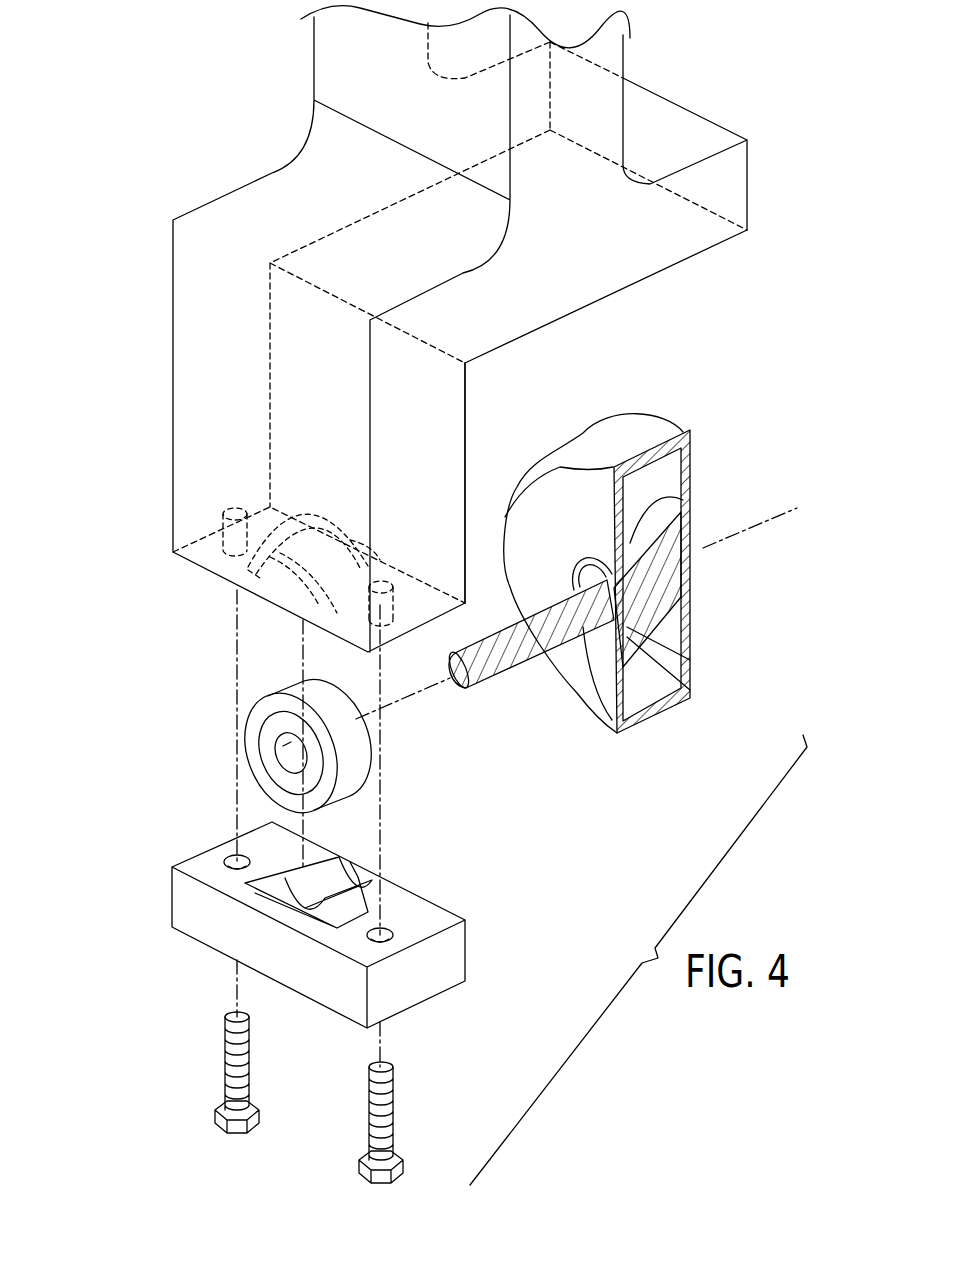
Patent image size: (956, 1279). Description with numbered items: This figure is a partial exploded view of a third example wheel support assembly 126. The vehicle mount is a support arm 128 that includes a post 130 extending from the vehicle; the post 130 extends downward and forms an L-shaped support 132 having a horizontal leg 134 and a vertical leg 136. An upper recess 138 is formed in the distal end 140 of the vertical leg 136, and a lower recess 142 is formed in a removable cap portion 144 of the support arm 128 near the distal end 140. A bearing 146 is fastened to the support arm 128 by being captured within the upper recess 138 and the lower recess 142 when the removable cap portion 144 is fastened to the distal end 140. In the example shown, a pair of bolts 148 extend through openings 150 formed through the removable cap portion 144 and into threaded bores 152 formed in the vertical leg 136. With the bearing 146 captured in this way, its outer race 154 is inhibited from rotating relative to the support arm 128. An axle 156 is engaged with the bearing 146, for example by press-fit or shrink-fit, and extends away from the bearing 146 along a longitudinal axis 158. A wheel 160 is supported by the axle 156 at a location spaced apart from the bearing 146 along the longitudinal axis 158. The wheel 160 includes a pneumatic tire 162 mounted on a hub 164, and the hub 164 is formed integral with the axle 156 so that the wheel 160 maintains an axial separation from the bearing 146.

The wheel support assembly 126 is at (158, 148).
The support arm 128 is at (281, 64).
The post 130 is at (410, 84).
The L-shaped support 132 is at (623, 313).
The horizontal leg 134 is at (598, 231).
The vertical leg 136 is at (437, 396).
The upper recess 138 is at (281, 596).
The distal end 140 is at (464, 440).
The lower recess 142 is at (272, 866).
The removable cap portion 144 is at (470, 945).
The bearing 146 is at (343, 683).
The bolts 148 is at (225, 1065).
The openings 150 is at (236, 858).
The threaded bores 152 is at (223, 520).
The outer race 154 is at (262, 697).
The axle 156 is at (518, 665).
The longitudinal axis 158 is at (768, 526).
The wheel 160 is at (688, 428).
The pneumatic tire 162 is at (692, 470).
The hub 164 is at (692, 575).